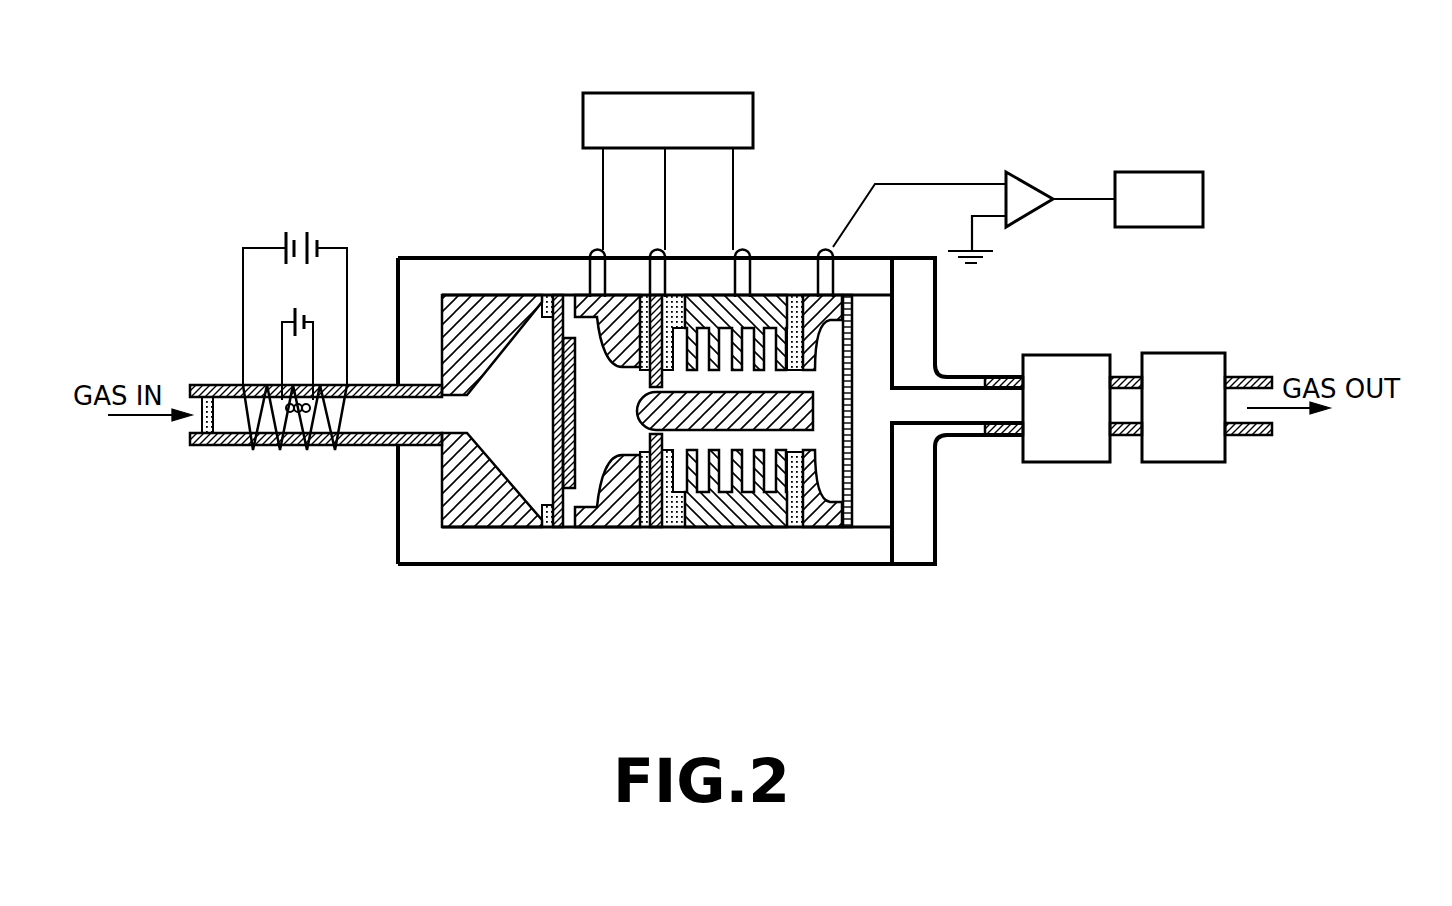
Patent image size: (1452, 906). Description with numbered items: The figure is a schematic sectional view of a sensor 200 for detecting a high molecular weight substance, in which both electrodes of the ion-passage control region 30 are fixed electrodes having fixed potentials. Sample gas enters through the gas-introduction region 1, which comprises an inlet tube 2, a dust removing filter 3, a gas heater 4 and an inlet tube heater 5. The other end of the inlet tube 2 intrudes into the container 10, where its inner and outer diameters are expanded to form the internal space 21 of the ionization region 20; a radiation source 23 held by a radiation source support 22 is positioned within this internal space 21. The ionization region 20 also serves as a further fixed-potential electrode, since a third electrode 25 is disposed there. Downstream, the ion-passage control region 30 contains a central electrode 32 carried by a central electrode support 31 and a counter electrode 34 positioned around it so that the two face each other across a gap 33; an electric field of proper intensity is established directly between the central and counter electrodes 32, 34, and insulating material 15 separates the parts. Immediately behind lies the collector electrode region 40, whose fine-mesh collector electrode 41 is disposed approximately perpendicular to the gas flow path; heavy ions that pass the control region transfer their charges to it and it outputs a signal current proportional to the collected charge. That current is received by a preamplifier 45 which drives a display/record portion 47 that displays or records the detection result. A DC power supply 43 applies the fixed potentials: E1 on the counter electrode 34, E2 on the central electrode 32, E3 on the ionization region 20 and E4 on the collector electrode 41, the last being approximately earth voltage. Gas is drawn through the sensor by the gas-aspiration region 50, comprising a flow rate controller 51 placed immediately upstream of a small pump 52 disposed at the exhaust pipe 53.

The gas-introduction region 1 is at (333, 450).
The inlet tube 2 is at (378, 443).
The dust removing filter 3 is at (225, 423).
The gas heater 4 is at (282, 337).
The inlet tube heater 5 is at (243, 353).
The container 10 is at (425, 548).
The insulating material 15 is at (543, 527).
The ionization region 20 is at (585, 480).
The internal space 21 is at (602, 473).
The support for a radiation source 22 is at (555, 363).
The radiation source 23 is at (553, 403).
The third electrode 25 is at (617, 295).
The ion-passage control region 30 is at (728, 433).
The central electrode support 31 is at (657, 527).
The central electrode 32 is at (640, 413).
The gap or interstice 33 is at (746, 440).
The counter electrode 34 is at (705, 517).
The collector electrode region 40 is at (867, 453).
The collector electrode 41 is at (855, 477).
The DC power supply 43 is at (753, 120).
The preamplifier 45 is at (1037, 183).
The display/record portion 47 is at (1163, 172).
The gas-aspiration region 50 is at (1124, 442).
The flow rate controller 51 is at (1067, 355).
The pump 52 is at (1178, 353).
The exhaust pipe 53 is at (1005, 435).
The potential on the counter electrode E1 is at (748, 250).
The potential on the central electrode E2 is at (651, 250).
The potential on the ionization region E3 is at (590, 250).
The potential on the collector electrode E4 is at (825, 247).
The sensor 200 is at (697, 72).